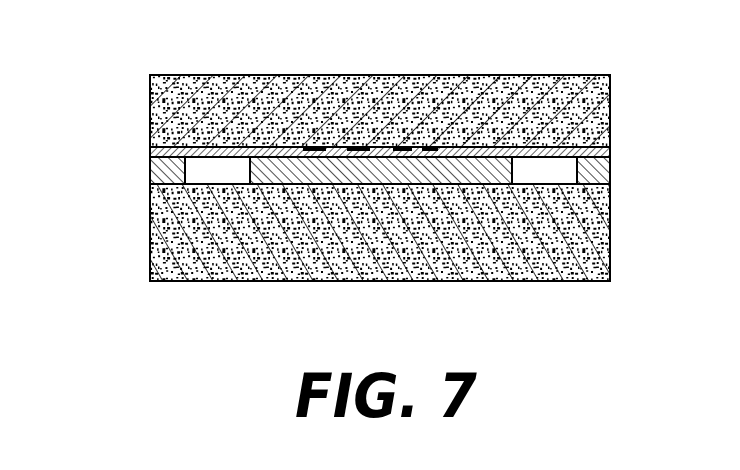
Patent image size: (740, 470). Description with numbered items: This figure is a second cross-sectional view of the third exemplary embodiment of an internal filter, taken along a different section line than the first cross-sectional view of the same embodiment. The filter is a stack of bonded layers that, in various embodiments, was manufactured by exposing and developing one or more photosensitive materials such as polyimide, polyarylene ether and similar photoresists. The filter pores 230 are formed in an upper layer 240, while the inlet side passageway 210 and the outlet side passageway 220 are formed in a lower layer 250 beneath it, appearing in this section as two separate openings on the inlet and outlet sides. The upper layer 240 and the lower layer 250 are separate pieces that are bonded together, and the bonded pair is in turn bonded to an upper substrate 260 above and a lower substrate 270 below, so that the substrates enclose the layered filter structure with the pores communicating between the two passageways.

The inlet side passageway 210 is at (213, 180).
The outlet side passageway 220 is at (543, 177).
The filter pores 230 is at (433, 150).
The upper layer 240 is at (150, 152).
The lower layer 250 is at (150, 172).
The upper substrate 260 is at (150, 102).
The lower substrate 270 is at (150, 233).